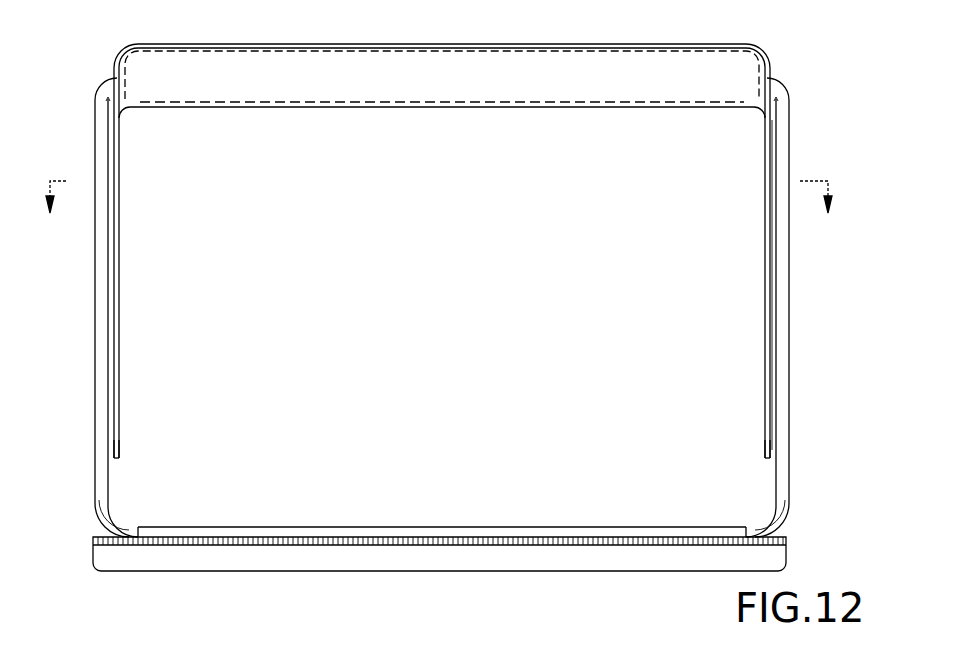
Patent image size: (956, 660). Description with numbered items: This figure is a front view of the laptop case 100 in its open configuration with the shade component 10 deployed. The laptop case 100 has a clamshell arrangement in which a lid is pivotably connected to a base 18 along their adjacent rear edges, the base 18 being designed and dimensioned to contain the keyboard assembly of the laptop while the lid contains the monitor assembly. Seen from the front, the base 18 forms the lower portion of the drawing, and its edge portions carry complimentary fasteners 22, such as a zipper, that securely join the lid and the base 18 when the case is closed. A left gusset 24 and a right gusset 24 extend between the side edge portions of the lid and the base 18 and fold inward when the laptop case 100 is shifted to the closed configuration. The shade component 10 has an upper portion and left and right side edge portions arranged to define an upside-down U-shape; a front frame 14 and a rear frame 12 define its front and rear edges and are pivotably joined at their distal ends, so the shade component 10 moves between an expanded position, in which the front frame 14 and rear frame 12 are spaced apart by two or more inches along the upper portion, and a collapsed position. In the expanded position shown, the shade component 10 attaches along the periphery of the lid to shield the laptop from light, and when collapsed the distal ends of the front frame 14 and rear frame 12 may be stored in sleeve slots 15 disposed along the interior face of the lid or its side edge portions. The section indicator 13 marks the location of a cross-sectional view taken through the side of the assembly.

The shade component 10 is at (712, 58).
The rear frame 12 is at (335, 107).
The section line 13- 13 is at (441, 214).
The front frame 14 is at (117, 440).
The sleeve slots 15 is at (112, 273).
The base 18 is at (342, 557).
The complimentary fasteners 22 is at (520, 538).
The gusset 24 is at (112, 418).
The laptop case 100 is at (752, 312).